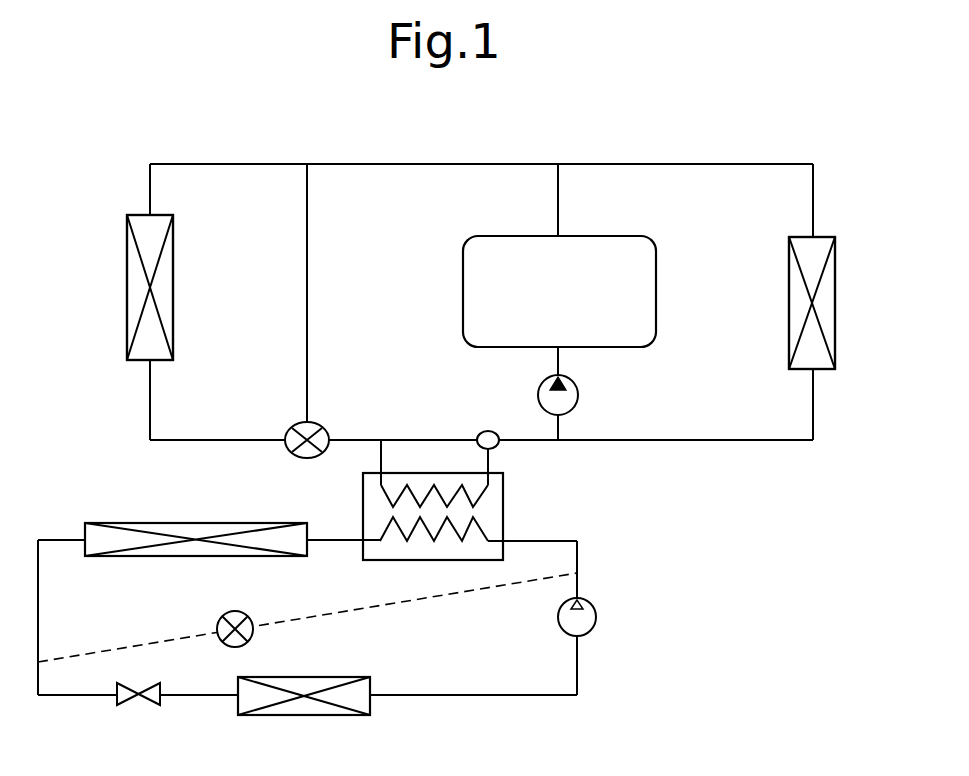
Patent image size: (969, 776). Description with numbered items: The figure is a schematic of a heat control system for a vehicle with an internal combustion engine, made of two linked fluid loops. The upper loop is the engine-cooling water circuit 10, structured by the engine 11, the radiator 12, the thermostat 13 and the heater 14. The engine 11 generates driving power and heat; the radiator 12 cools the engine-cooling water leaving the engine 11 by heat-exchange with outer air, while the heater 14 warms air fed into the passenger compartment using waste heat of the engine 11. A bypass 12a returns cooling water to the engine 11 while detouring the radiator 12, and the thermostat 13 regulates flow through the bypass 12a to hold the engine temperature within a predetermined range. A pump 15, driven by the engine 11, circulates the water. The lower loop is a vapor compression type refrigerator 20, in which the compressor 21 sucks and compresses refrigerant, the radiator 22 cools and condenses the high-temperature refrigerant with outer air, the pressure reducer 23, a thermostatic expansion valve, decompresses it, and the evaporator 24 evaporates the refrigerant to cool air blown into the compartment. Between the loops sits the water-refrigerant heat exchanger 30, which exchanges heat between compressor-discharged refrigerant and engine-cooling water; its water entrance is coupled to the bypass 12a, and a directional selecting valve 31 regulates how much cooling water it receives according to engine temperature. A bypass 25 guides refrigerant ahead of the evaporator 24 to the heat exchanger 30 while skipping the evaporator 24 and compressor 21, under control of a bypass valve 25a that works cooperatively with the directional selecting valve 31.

The engine-cooling water circuit 10 is at (635, 161).
The engine 11 is at (656, 292).
The radiator 12 is at (126, 290).
The bypass 12a is at (308, 246).
The thermostat 13 is at (321, 425).
The heater 14 is at (824, 236).
The pump 15 is at (579, 396).
The vapor compression type refrigerator 20 is at (584, 552).
The compressor 21 is at (597, 617).
The radiator 22 is at (222, 522).
The pressure reducer 23 is at (148, 707).
The evaporator 24 is at (300, 716).
The bypass 25 is at (499, 586).
The bypass valve 25a is at (236, 611).
The water-refrigerant heat exchanger 30 is at (511, 500).
The directional selecting valve 31 is at (488, 430).